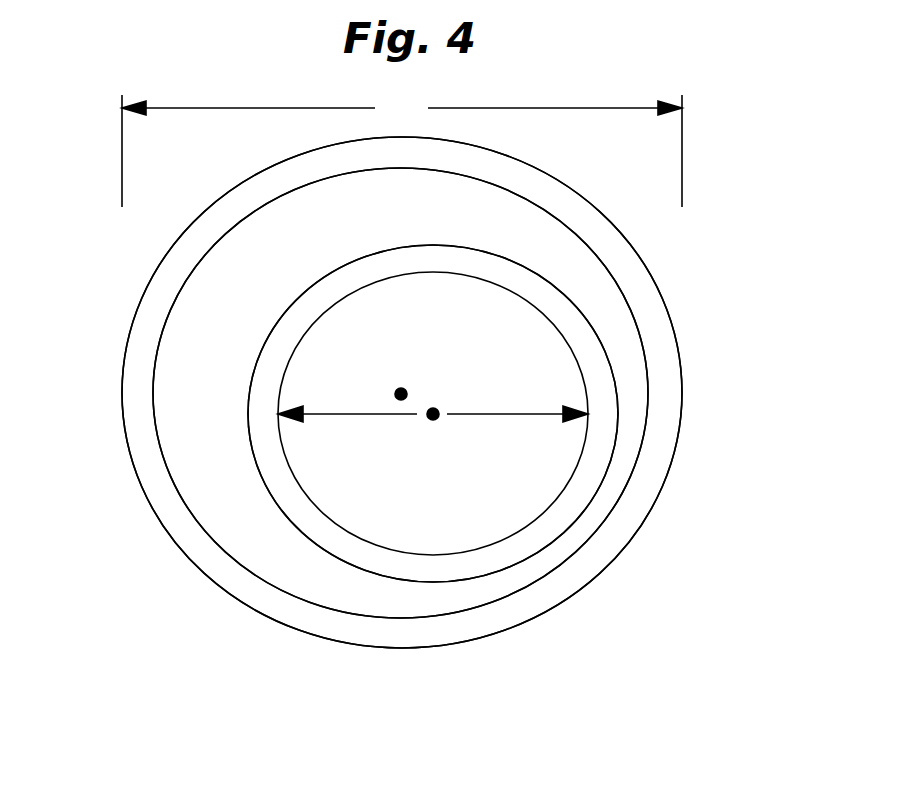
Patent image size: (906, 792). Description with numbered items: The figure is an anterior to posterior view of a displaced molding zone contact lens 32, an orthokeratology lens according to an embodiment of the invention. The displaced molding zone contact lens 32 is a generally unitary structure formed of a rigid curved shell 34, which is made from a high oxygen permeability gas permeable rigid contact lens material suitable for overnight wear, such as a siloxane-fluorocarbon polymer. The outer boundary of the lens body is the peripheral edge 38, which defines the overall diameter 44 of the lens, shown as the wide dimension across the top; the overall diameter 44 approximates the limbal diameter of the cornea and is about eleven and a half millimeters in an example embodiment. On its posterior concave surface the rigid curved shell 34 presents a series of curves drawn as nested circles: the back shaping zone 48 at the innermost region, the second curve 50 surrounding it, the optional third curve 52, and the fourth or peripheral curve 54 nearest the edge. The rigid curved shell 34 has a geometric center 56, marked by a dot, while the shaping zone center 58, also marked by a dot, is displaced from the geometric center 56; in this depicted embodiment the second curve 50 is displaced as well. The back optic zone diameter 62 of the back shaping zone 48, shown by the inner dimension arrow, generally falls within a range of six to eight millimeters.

The displaced molding zone contact lens 32 is at (684, 422).
The rigid curved shell 34 is at (258, 617).
The peripheral edge 38 is at (150, 508).
The overall diameter 44 is at (402, 151).
The back shaping zone 48 is at (538, 363).
The second curve 50 is at (598, 397).
The third curve 52 is at (595, 512).
The fourth or peripheral curve 54 is at (493, 623).
The geometric center 56 is at (401, 394).
The shaping zone center 58 is at (433, 414).
The back optic zone diameter 62 is at (372, 418).